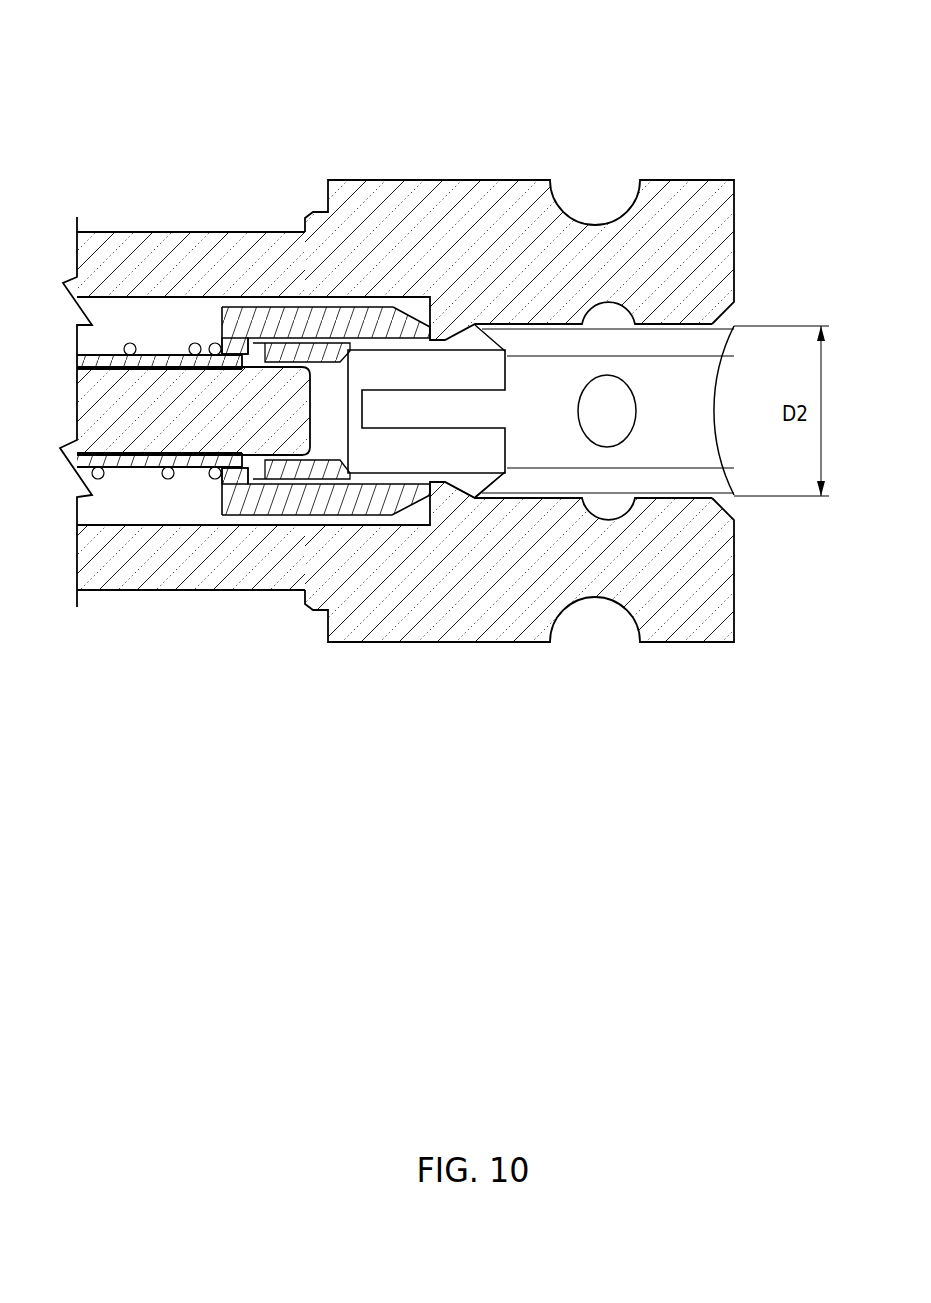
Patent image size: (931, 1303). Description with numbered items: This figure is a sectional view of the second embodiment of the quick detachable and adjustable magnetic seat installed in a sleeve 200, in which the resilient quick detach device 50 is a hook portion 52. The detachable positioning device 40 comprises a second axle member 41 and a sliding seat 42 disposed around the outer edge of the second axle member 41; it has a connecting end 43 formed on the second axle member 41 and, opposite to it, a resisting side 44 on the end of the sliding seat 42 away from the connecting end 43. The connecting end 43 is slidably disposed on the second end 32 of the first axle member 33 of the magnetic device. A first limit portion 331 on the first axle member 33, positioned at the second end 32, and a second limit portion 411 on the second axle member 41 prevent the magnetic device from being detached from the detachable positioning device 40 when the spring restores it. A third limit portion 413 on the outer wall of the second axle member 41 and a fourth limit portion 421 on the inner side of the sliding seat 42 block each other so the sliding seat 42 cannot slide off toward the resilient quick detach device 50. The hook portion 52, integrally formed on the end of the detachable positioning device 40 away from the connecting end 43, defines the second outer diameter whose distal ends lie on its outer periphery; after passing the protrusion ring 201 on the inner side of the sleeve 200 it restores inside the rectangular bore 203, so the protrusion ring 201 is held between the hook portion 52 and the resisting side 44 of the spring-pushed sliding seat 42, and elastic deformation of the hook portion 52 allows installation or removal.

The sleeve 200 is at (505, 213).
The protrusion ring 201 is at (447, 349).
The rectangular bore 203 is at (707, 370).
The resilient quick detach device 50 is at (519, 347).
The hook portion 52 is at (493, 477).
The second end 32 is at (298, 403).
The first axle member 33 is at (133, 440).
The first limit portion 331 is at (245, 465).
The connecting end 43 is at (150, 357).
The detachable positioning device 40 is at (393, 522).
The second axle member 41 is at (280, 350).
The second limit portion 411 is at (268, 355).
The third limit portion 413 is at (252, 473).
The sliding seat 42 is at (347, 503).
The fourth limit portion 421 is at (253, 338).
The resisting side 44 is at (433, 493).